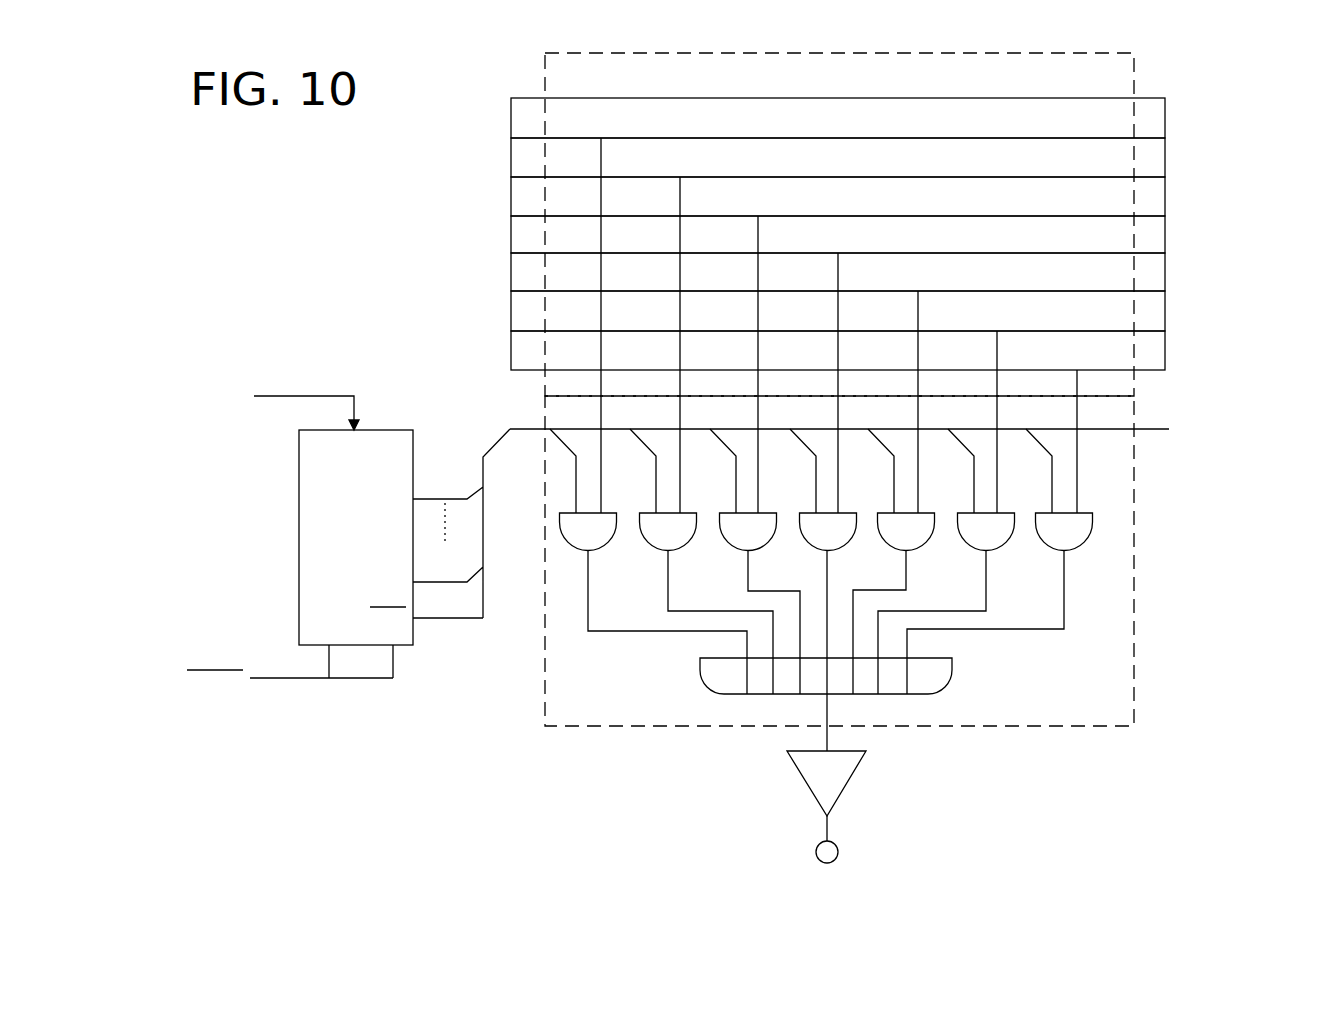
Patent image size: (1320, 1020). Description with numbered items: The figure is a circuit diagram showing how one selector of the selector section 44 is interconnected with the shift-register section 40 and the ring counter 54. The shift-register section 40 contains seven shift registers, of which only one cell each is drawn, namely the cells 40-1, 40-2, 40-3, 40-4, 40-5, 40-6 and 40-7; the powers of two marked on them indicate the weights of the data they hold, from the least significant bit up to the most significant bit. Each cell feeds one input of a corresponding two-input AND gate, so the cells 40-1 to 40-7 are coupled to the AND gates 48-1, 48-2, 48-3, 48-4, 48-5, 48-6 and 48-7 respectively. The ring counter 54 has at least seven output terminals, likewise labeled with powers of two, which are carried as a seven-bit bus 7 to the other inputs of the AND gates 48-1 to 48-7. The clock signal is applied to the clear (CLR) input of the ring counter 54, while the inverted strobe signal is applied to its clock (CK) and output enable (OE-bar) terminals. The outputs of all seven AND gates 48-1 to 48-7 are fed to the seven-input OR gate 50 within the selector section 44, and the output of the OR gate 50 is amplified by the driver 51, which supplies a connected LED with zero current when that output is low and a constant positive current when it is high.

The shift-register section 40 is at (1134, 70).
The cell 40-1 is at (1166, 350).
The cell 40-2 is at (1166, 312).
The cell 40-3 is at (1166, 273).
The cell 40-4 is at (1166, 235).
The cell 40-5 is at (1166, 197).
The cell 40-6 is at (1166, 158).
The cell 40-7 is at (1166, 117).
The 7-bit bus 7 is at (540, 417).
The selector section 44 is at (1134, 706).
The AND gate 48-1 is at (1080, 548).
The AND gate 48-2 is at (996, 546).
The AND gate 48-3 is at (920, 546).
The AND gate 48-4 is at (841, 548).
The AND gate 48-5 is at (762, 548).
The AND gate 48-6 is at (684, 550).
The AND gate 48-7 is at (604, 552).
The OR gate 50 is at (952, 676).
The driver 51 is at (848, 782).
The ring counter 54 is at (298, 570).